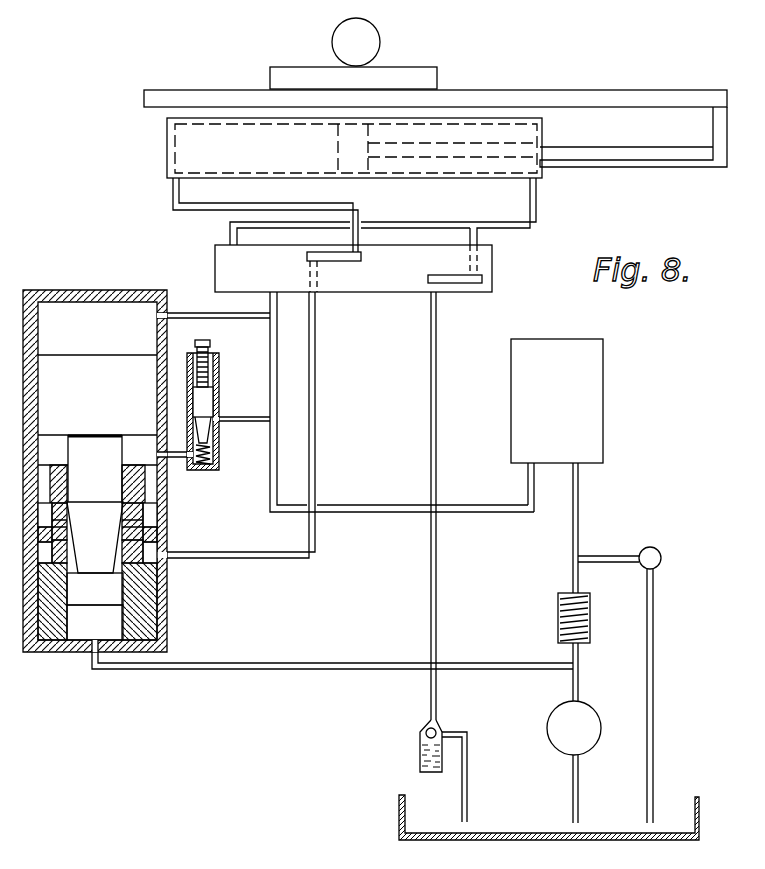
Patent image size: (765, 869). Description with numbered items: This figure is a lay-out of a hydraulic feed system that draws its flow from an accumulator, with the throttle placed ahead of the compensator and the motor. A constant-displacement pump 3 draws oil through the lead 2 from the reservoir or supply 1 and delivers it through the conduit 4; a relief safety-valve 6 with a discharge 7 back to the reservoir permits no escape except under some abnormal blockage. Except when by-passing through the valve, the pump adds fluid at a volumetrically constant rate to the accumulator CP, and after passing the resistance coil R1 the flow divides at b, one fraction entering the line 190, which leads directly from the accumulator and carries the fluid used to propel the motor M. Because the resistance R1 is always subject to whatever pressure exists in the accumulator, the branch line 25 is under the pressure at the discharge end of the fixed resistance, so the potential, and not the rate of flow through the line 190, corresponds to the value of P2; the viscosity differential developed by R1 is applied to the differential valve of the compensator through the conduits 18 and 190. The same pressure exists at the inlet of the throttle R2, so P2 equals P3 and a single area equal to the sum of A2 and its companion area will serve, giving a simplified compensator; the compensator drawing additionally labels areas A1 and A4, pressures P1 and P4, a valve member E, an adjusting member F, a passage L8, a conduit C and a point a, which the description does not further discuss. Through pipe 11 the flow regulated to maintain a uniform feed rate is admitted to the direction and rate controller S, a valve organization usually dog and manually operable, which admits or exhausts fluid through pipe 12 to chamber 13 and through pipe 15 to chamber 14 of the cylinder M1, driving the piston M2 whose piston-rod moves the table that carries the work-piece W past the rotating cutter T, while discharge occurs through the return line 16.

The cutter T is at (379, 33).
The work-piece W is at (437, 71).
The cylinder M1 is at (167, 126).
The motor M is at (164, 157).
The piston M2 is at (338, 147).
The chamber 14 is at (234, 148).
The chamber 13 is at (457, 178).
The pipe 15 is at (172, 198).
The pipe 12 is at (538, 210).
The direction and rate controller S is at (215, 266).
The conduit 4 is at (270, 299).
The line 190 is at (403, 508).
The pipe 11 is at (312, 305).
The return line 16 is at (437, 412).
The pressure P2 is at (213, 303).
The area A2 is at (95, 471).
The piston area A4 is at (66, 440).
The piston area A1 is at (95, 571).
The pressure P1 is at (75, 671).
The conduit 18 is at (275, 670).
The line L8 is at (175, 442).
The pressure P4 is at (175, 474).
The relief valve E is at (203, 411).
The adjusting screw F is at (212, 345).
The branch line 25 is at (239, 320).
The throttle R2 is at (221, 462).
The pressure P3 is at (270, 376).
The conduit C is at (287, 413).
The accumulator CP is at (557, 401).
The division point b is at (527, 466).
The resistance coil R1 is at (590, 631).
The junction a is at (591, 670).
The relief safety-valve 6 is at (662, 556).
The discharge 7 is at (655, 716).
The constant-displacement pump 3 is at (547, 728).
The lead 2 is at (570, 788).
The reservoir 1 is at (398, 805).